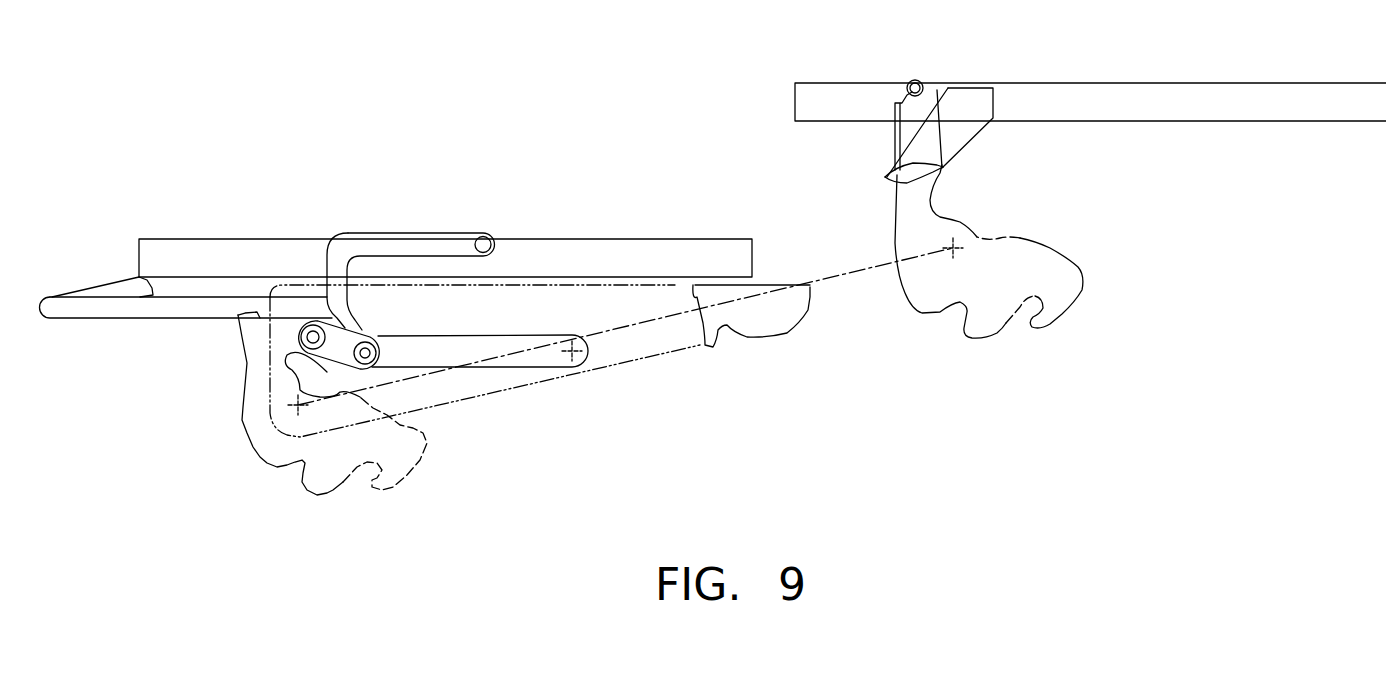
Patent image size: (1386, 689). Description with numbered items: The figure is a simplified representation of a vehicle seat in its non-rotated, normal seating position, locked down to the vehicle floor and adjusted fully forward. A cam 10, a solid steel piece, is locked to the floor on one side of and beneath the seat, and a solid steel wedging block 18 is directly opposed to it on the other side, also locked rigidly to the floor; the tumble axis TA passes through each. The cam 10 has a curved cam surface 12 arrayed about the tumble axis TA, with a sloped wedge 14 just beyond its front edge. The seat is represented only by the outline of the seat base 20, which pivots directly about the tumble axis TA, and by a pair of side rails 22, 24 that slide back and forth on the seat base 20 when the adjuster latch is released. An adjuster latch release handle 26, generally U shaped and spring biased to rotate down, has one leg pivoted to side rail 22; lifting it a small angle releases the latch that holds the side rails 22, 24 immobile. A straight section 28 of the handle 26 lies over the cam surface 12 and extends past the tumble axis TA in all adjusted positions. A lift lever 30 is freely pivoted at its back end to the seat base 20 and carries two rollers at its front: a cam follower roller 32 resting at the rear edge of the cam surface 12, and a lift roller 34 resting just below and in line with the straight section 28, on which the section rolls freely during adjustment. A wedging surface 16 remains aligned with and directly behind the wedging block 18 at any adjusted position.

The cam 10 is at (232, 394).
The cam surface 12 is at (348, 345).
The wedge 14 is at (237, 313).
The wedging surface 16 is at (893, 163).
The wedging block 18 is at (918, 82).
The seat base 20 is at (763, 330).
The side rail 22 is at (598, 245).
The side rail 24 is at (1055, 88).
The adjuster latch release handle 26 is at (423, 235).
The straight section 28 is at (118, 318).
The lift lever 30 is at (488, 367).
The cam follower roller 32 is at (370, 355).
The lift roller 34 is at (318, 337).
The tumble axis TA is at (833, 283).